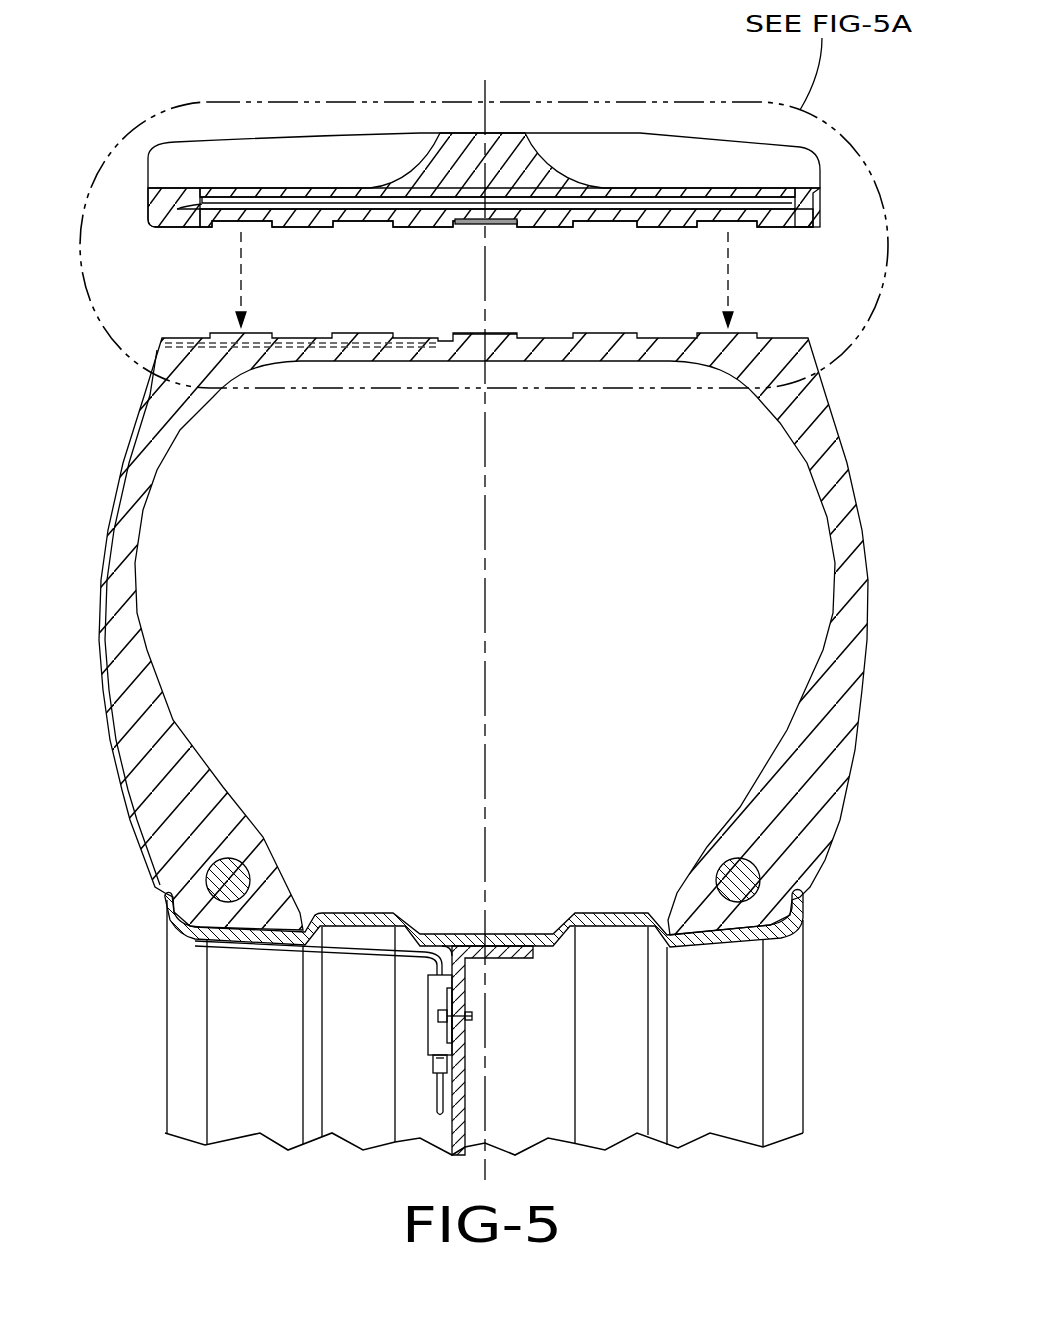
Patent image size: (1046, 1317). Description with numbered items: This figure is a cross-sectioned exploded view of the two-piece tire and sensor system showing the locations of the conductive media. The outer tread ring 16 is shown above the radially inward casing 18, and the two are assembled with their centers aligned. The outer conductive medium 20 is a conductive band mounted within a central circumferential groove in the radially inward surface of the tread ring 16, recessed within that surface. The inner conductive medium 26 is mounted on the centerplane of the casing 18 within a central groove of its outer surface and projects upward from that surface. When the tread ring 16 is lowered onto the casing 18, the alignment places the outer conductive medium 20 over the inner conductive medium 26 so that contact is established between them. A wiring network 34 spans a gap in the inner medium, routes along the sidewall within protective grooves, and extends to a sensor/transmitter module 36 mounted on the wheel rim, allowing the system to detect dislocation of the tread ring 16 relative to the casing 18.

The tread ring 16 is at (503, 143).
The casing 18 is at (842, 453).
The outer conductive medium 20 is at (498, 222).
The inner conductive medium 26 is at (493, 333).
The wiring network 34 is at (343, 347).
The sensor/transmitter module 36 is at (432, 995).